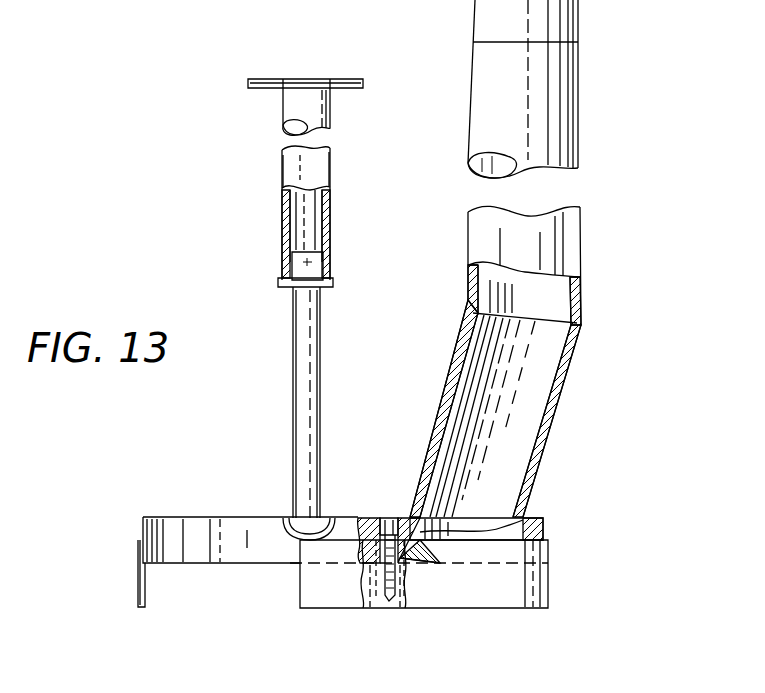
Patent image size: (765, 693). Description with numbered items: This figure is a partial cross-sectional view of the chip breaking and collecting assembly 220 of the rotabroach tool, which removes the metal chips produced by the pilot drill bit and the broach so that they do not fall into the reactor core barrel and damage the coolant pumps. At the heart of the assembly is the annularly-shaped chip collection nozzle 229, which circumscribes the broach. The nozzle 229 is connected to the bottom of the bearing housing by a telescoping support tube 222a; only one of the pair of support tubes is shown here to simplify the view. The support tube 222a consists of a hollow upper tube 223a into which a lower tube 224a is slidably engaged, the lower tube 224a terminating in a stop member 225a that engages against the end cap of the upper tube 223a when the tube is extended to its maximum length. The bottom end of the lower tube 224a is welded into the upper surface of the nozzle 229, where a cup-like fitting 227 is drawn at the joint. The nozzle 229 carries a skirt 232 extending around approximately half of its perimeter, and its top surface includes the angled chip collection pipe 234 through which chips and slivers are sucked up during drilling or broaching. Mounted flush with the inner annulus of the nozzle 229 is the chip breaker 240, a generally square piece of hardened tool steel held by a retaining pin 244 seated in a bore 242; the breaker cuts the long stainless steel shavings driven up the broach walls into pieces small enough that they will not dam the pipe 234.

The chip breaking and collecting assembly 220 is at (650, 418).
The telescoping support tube 222a is at (278, 173).
The hollow upper tube 223a is at (313, 175).
The lower tube 224a is at (315, 383).
The stop member 225a is at (305, 268).
The cup 227 is at (292, 520).
The chip collection nozzle 229 is at (202, 508).
The skirt 232 is at (505, 593).
The chip collection pipe 234 is at (543, 467).
The chip breaker 240 is at (400, 583).
The bore 242 is at (378, 600).
The retaining pin 244 is at (387, 600).